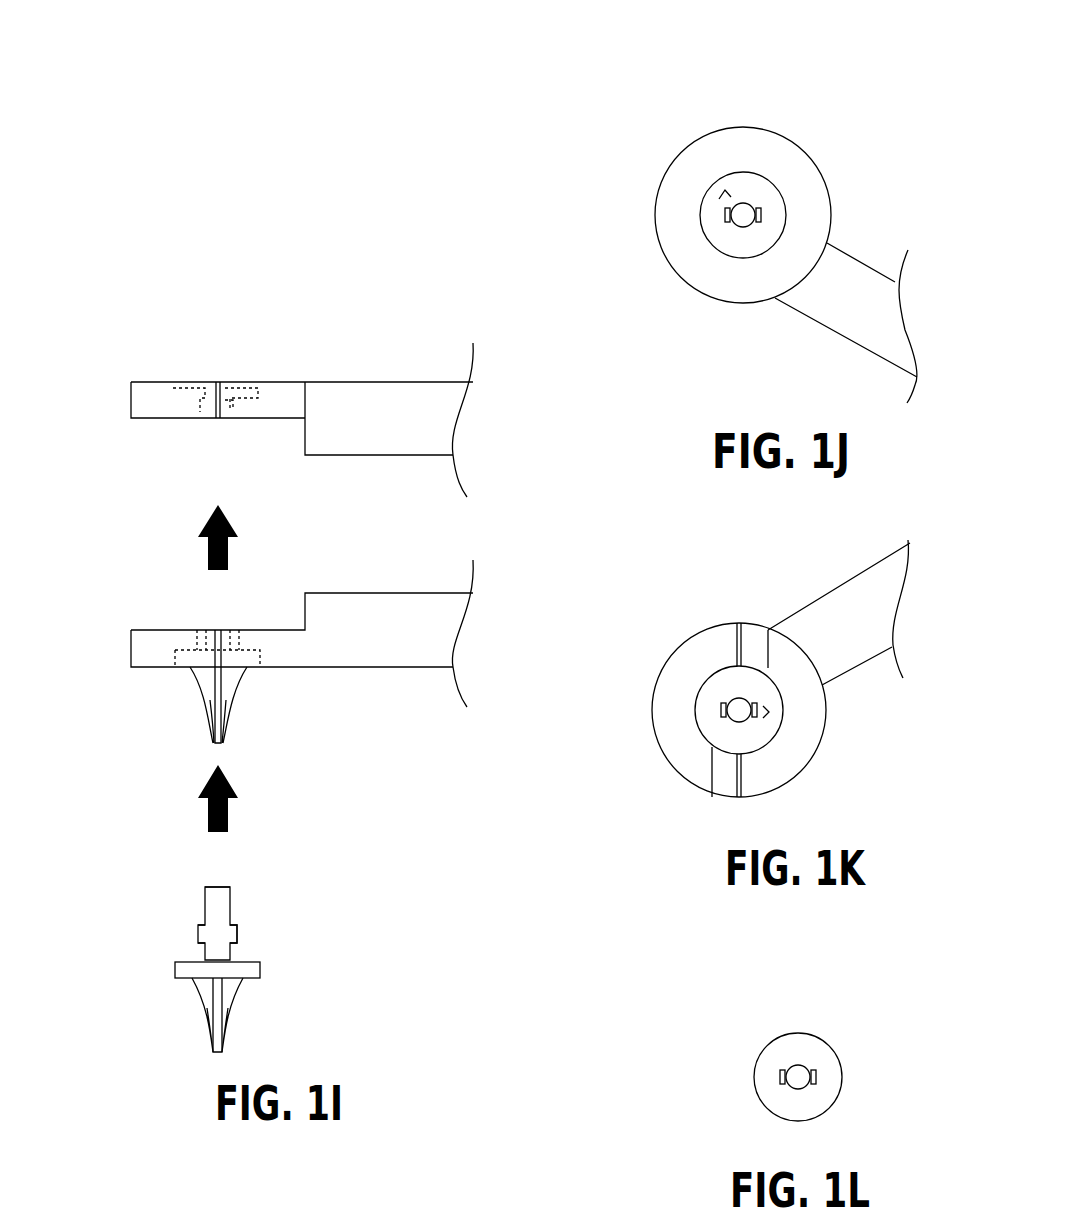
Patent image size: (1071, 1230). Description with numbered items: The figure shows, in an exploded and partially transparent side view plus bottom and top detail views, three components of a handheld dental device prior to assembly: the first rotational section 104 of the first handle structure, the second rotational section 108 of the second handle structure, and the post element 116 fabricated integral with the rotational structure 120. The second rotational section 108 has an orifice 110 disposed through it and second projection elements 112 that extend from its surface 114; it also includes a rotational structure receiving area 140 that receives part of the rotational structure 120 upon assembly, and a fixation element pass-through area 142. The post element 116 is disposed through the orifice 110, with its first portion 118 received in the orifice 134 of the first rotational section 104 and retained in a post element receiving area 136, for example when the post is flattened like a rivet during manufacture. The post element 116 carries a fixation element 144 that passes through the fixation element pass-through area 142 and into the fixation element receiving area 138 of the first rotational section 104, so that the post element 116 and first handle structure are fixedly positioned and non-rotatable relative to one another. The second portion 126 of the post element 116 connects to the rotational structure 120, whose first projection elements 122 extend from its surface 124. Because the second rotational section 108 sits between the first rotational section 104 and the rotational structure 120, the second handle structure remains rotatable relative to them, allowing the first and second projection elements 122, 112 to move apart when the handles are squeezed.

In FIG. 1I, the first rotational section 104 is at (256, 353).
In FIG. 1J, the first rotational section 104 is at (737, 213).
In FIG. 1I, the second rotational section 108 is at (253, 594).
In FIG. 1K, the second rotational section 108 is at (745, 645).
In FIG. 1K, the orifice 110 is at (740, 714).
In FIG. 1I, the second projection elements 112 is at (213, 710).
In FIG. 1K, the second projection elements 112 is at (752, 640).
In FIG. 1K, the surface 114 is at (802, 727).
In FIG. 1I, the post element 116 is at (213, 915).
In FIG. 1L, the post element 116 is at (797, 1066).
In FIG. 1I, the first portion 118 is at (228, 887).
In FIG. 1I, the rotational structure 120 is at (180, 967).
In FIG. 1L, the rotational structure 120 is at (767, 1058).
In FIG. 1I, the first projection elements 122 is at (208, 1013).
In FIG. 1I, the surface 124 is at (252, 980).
In FIG. 1I, the second portion 126 is at (222, 958).
In FIG. 1I, the orifice 134 is at (225, 382).
In FIG. 1J, the orifice 134 is at (743, 213).
In FIG. 1I, the post element receiving area 136 is at (191, 382).
In FIG. 1J, the post element receiving area 136 is at (725, 190).
In FIG. 1I, the fixation element receiving area 138 is at (231, 410).
In FIG. 1J, the fixation element receiving area 138 is at (725, 197).
In FIG. 1I, the rotational structure receiving area 140 is at (252, 662).
In FIG. 1K, the rotational structure receiving area 140 is at (772, 712).
In FIG. 1I, the fixation element pass-through area 142 is at (203, 633).
In FIG. 1K, the fixation element pass-through area 142 is at (717, 704).
In FIG. 1I, the fixation element 144 is at (232, 933).
In FIG. 1L, the fixation element 144 is at (812, 1070).